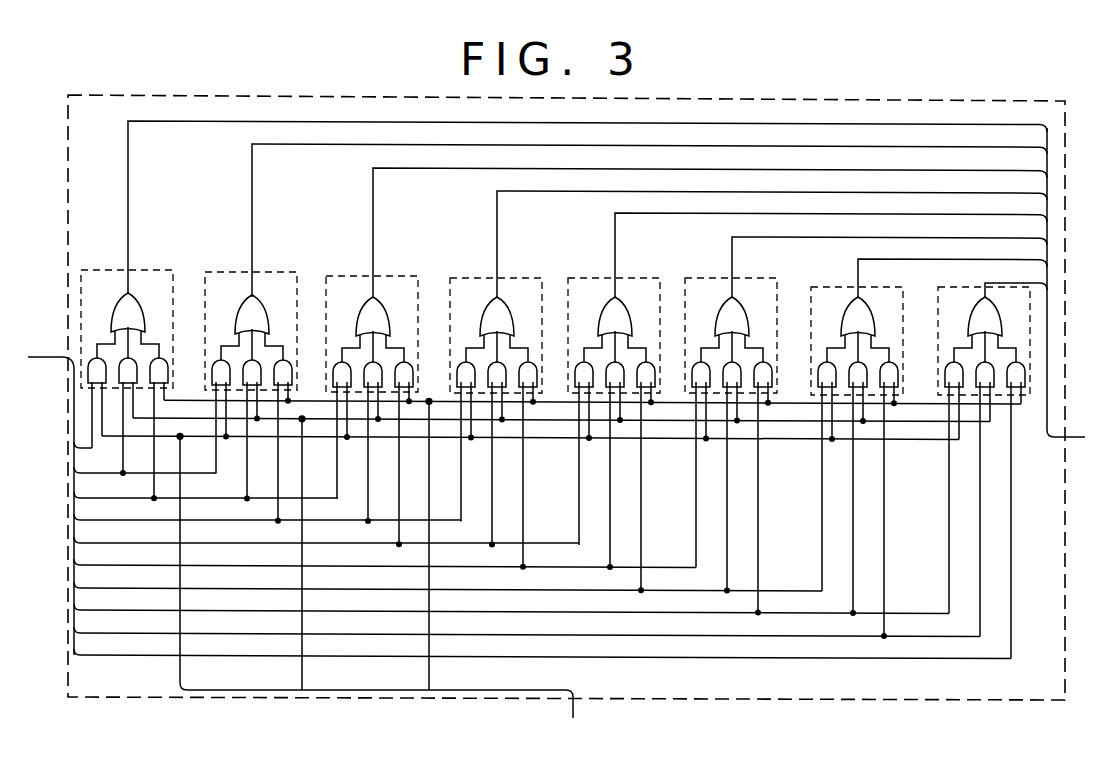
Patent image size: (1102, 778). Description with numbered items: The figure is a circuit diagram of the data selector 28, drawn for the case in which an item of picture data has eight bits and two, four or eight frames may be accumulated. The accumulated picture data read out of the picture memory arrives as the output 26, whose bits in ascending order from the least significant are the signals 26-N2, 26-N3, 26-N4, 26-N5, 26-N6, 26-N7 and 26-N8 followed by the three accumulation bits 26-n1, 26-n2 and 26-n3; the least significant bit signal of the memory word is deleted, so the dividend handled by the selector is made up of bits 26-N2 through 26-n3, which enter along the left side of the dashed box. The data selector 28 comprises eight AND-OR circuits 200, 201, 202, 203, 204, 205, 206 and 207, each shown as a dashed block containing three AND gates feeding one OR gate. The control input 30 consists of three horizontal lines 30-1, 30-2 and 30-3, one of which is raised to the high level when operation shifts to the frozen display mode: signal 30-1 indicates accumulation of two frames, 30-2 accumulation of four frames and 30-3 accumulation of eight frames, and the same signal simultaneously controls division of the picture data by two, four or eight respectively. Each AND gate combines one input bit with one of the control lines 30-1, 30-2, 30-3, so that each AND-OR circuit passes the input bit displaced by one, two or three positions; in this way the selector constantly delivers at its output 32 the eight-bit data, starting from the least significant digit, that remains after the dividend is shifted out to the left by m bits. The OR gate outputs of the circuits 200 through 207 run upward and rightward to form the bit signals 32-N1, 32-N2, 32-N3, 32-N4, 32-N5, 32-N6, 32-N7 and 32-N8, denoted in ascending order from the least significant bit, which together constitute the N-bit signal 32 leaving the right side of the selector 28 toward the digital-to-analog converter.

The data selector 28 is at (790, 98).
The data output of the picture memory 26 is at (60, 357).
The bit signal n3 of the picture data 26-n3 is at (66, 446).
The bit signal n2 of the picture data 26-n2 is at (80, 476).
The bit signal n1 of the picture data 26-n1 is at (80, 501).
The bit signal N8 of the picture data 26-N8 is at (80, 523).
The bit signal N7 of the picture data 26-N7 is at (80, 546).
The bit signal N6 of the picture data 26-N6 is at (80, 568).
The bit signal N5 of the picture data 26-N5 is at (80, 591).
The bit signal N4 of the picture data 26-N4 is at (80, 613).
The bit signal N3 of the picture data 26-N3 is at (80, 636).
The bit signal N2 of the picture data 26-N2 is at (80, 658).
The N-bit output signal 32 is at (1076, 440).
The output bit signal N1 32-N1 is at (1038, 281).
The output bit signal N2 32-N2 is at (930, 258).
The output bit signal N3 32-N3 is at (746, 236).
The output bit signal N4 32-N4 is at (628, 213).
The output bit signal N5 32-N5 is at (510, 190).
The output bit signal N6 32-N6 is at (378, 168).
The output bit signal N7 32-N7 is at (244, 144).
The output bit signal N8 32-N8 is at (138, 116).
The control input 30 is at (576, 708).
The control signal for two-frame accumulation 30-1 is at (431, 664).
The control signal for four-frame accumulation 30-2 is at (304, 664).
The control signal for eight-frame accumulation 30-3 is at (182, 664).
The AND-OR circuit 200 is at (920, 288).
The AND-OR circuit 201 is at (826, 287).
The AND-OR circuit 202 is at (702, 280).
The AND-OR circuit 203 is at (582, 278).
The AND-OR circuit 204 is at (462, 278).
The AND-OR circuit 205 is at (344, 270).
The AND-OR circuit 206 is at (222, 267).
The AND-OR circuit 207 is at (92, 268).